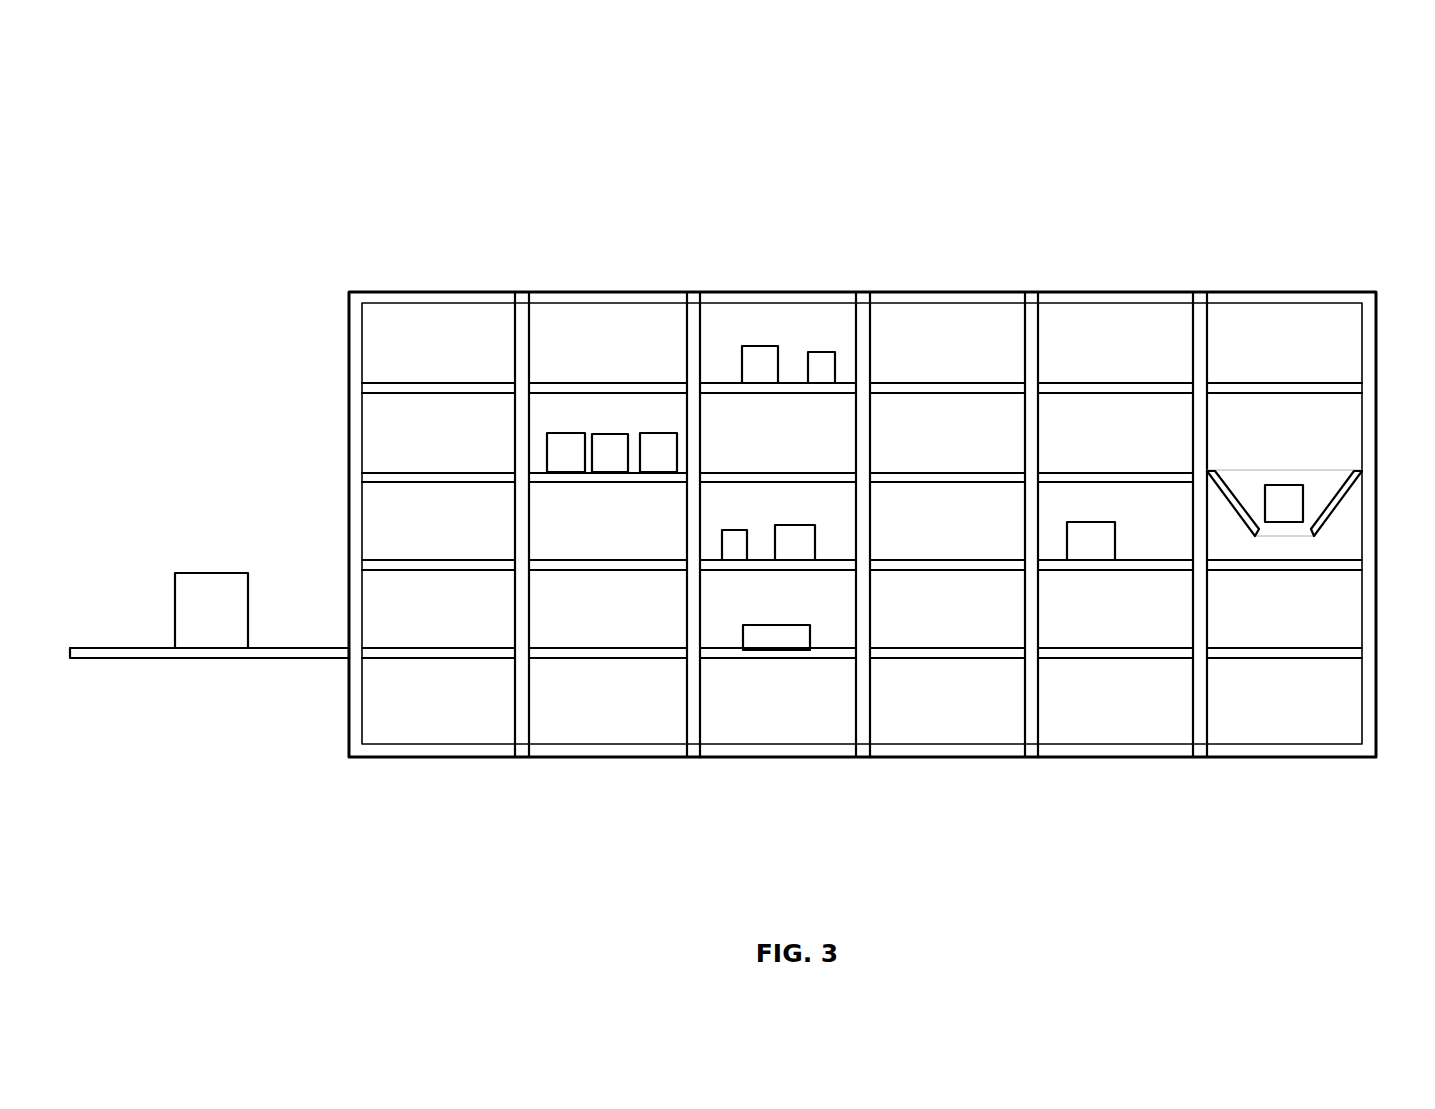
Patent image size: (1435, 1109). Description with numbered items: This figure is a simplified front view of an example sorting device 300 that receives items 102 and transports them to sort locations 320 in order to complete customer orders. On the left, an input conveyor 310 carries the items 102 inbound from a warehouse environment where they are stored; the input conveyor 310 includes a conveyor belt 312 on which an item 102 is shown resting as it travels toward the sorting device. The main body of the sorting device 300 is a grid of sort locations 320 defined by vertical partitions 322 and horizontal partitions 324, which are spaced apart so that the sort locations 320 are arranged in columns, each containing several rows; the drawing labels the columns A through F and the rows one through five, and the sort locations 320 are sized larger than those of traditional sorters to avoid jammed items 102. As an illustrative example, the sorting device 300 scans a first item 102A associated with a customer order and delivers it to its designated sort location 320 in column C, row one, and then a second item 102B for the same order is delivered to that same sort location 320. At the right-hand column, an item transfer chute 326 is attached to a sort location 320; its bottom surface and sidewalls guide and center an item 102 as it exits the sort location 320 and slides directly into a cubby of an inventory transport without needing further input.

The sorting device 300 is at (214, 147).
The items 102 is at (210, 573).
The first item 102A is at (755, 368).
The second item 102B is at (825, 362).
The input conveyor 310 is at (117, 642).
The conveyor belt 312 is at (153, 653).
The sort locations 320 is at (383, 350).
The vertical partitions 322 is at (513, 700).
The horizontal partitions 324 is at (397, 653).
The item transfer chutes 326 is at (1250, 498).